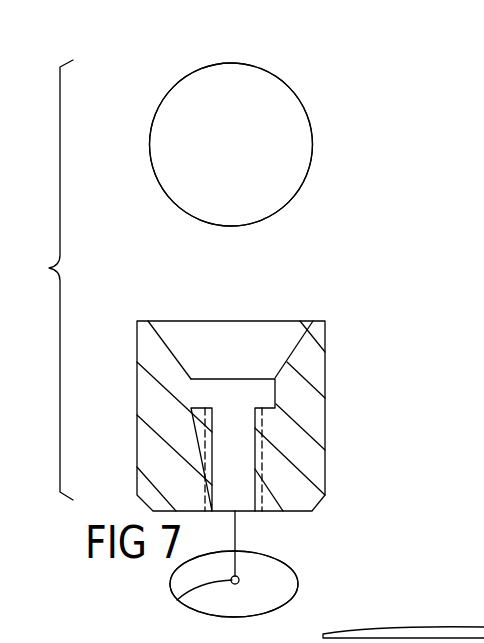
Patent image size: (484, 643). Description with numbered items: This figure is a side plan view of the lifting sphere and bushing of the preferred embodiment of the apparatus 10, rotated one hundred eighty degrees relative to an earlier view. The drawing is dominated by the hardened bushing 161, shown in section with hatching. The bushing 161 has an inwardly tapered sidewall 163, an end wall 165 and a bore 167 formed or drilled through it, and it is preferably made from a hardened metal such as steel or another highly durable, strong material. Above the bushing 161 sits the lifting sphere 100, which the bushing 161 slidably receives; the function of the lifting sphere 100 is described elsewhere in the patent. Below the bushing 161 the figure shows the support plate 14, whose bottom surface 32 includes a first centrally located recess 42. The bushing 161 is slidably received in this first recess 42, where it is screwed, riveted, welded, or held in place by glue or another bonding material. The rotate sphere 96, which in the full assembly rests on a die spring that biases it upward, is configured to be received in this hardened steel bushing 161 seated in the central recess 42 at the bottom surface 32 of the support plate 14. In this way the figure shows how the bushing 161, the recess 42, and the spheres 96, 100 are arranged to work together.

The apparatus 10 is at (476, 87).
The lifting sphere 100 is at (228, 62).
The rotate sphere 96 is at (150, 144).
The hardened bushing 161 is at (277, 406).
The inwardly tapered sidewall 163 is at (298, 355).
The end wall 165 is at (230, 378).
The bore 167 is at (267, 511).
The support plate 14 is at (295, 568).
The bottom surface 32 is at (277, 587).
The first centrally located recess 42 is at (177, 600).